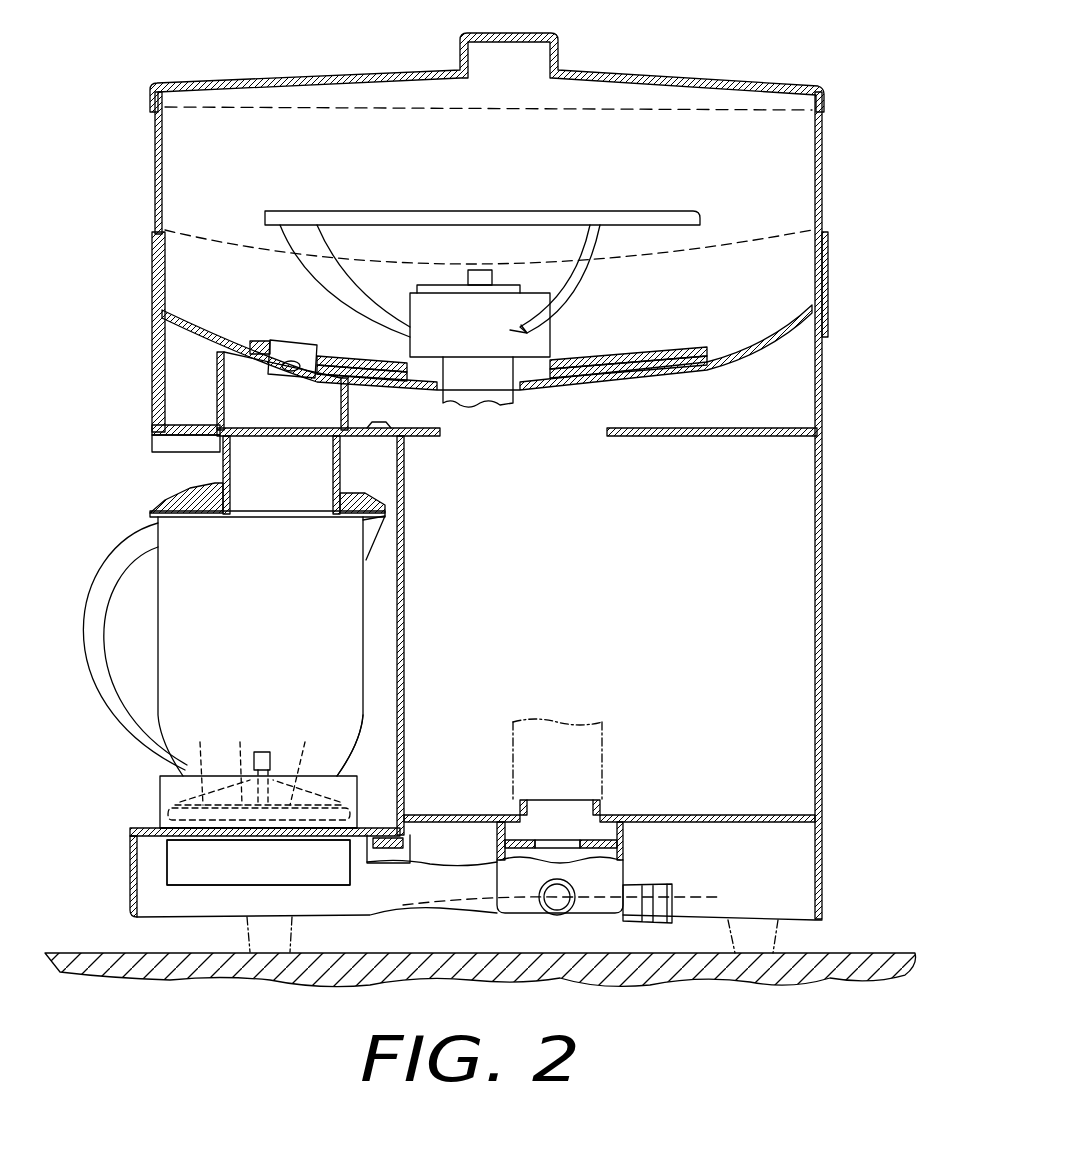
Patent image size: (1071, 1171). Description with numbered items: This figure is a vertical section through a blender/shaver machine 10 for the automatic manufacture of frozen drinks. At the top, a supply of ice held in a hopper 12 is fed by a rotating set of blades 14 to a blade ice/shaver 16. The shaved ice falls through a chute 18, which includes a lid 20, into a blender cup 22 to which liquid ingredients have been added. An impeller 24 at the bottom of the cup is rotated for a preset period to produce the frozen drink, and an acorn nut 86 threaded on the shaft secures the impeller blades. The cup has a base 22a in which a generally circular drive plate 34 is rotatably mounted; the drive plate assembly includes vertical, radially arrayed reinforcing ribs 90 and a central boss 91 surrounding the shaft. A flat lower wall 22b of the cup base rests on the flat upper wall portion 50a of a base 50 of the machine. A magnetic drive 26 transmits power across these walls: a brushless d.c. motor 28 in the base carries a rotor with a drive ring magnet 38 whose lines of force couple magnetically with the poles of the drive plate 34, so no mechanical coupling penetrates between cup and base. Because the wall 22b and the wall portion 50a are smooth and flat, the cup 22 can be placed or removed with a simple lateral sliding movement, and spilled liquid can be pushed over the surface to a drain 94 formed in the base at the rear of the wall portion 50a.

The blender/shaver machine 10 is at (772, 36).
The hopper 12 is at (728, 170).
The rotating set of blades 14 is at (348, 290).
The blade ice/shaver 16 is at (269, 323).
The chute 18 is at (222, 376).
The lid 20 is at (205, 495).
The blender cup 22 is at (162, 637).
The base of the blender cup 22a is at (160, 778).
The flat lower wall of the cup base 22b is at (158, 826).
The impeller 24 is at (305, 762).
The magnetic drive 26 is at (170, 805).
The brushless d.c. motor 28 is at (300, 871).
The drive ring magnet 38 is at (258, 862).
The drive plate 34 is at (338, 768).
The base 50 is at (448, 890).
The flat upper wall portion of the base 50a is at (385, 828).
The acorn nut 86 is at (265, 750).
The reinforcing ribs 90 is at (194, 762).
The central boss 91 is at (236, 762).
The drain 94 is at (392, 820).